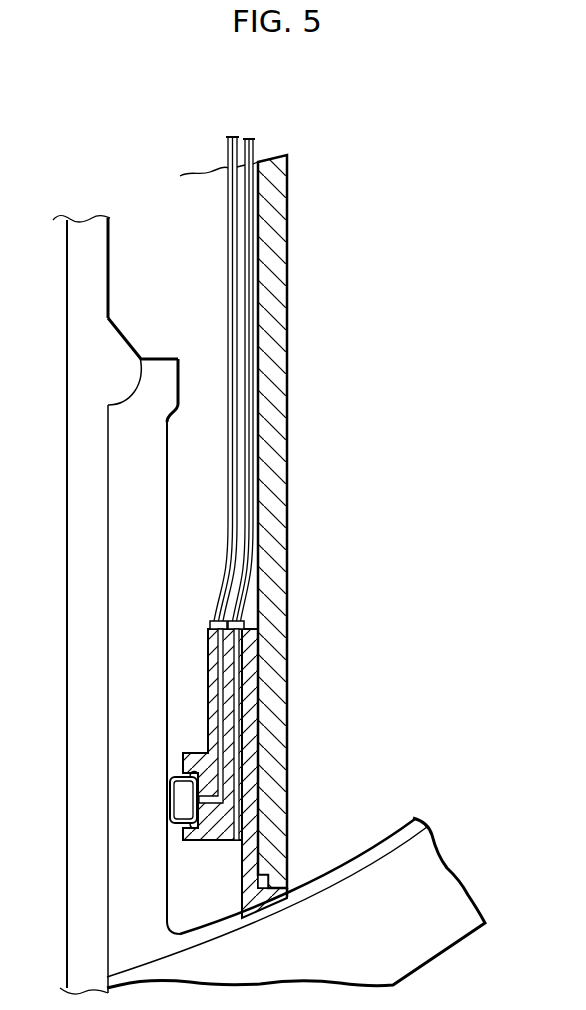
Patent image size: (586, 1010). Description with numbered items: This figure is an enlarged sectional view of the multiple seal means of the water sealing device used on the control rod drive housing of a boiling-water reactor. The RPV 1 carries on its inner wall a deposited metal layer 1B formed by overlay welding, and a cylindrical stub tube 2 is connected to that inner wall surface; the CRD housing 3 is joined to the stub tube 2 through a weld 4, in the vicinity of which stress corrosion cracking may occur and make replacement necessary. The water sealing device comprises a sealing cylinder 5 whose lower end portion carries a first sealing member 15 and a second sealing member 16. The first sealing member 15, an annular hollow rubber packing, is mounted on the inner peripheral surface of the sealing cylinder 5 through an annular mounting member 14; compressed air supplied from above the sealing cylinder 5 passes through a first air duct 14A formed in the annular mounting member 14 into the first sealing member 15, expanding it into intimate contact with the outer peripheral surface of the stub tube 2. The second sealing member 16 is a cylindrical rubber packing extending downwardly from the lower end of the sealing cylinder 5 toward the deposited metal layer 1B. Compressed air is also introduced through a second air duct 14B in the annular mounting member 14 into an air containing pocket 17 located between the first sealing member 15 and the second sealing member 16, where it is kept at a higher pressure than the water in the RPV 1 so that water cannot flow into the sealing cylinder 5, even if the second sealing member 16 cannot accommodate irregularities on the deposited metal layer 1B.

The RPV 1 is at (470, 882).
The deposited metal layer 1B is at (383, 840).
The stub tube 2 is at (168, 450).
The CRD housing 3 is at (110, 278).
The weld 4 is at (128, 338).
The sealing cylinder 5 is at (288, 347).
The annular mounting member 14 is at (208, 717).
The first air duct 14A is at (218, 657).
The second air duct 14B is at (237, 662).
The first sealing member 15 is at (167, 788).
The second sealing member 16 is at (292, 888).
The air containing pocket 17 is at (240, 873).